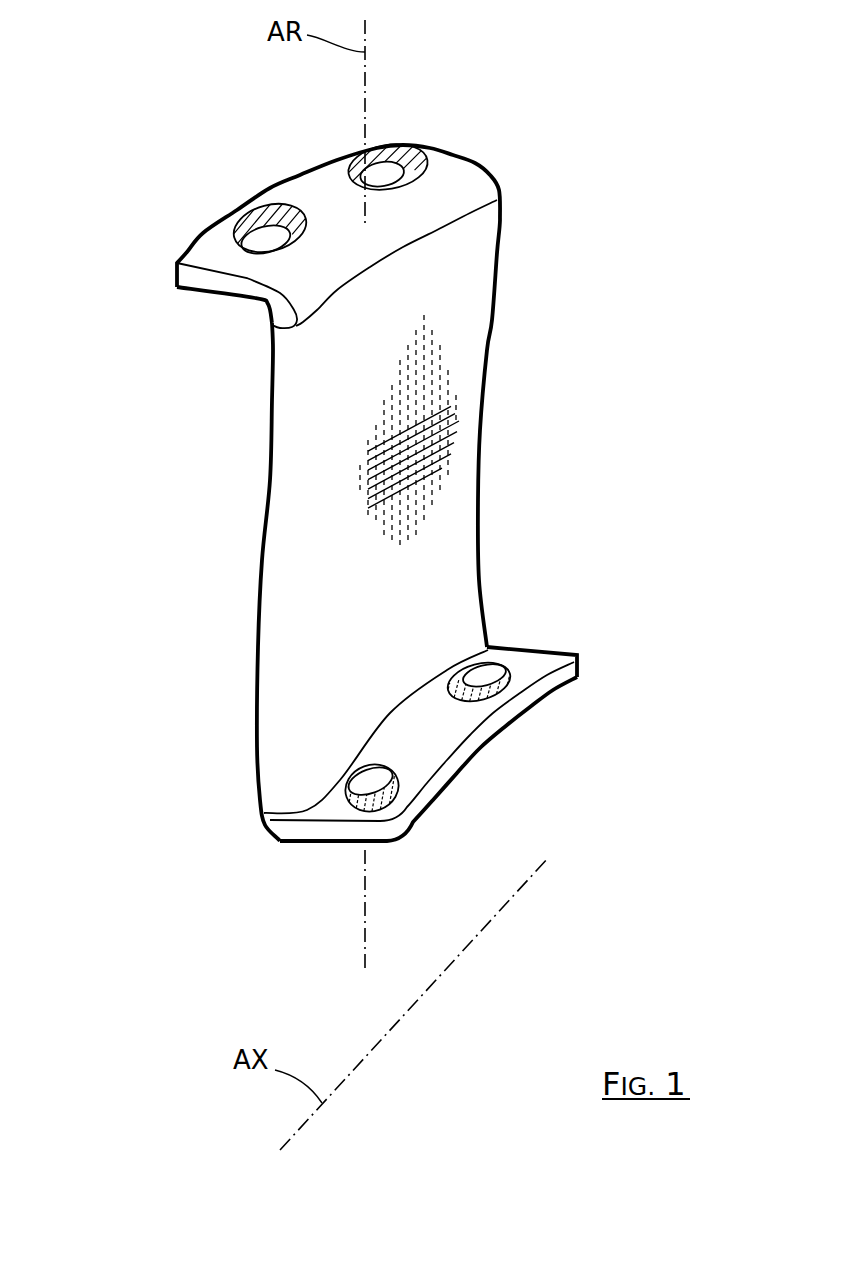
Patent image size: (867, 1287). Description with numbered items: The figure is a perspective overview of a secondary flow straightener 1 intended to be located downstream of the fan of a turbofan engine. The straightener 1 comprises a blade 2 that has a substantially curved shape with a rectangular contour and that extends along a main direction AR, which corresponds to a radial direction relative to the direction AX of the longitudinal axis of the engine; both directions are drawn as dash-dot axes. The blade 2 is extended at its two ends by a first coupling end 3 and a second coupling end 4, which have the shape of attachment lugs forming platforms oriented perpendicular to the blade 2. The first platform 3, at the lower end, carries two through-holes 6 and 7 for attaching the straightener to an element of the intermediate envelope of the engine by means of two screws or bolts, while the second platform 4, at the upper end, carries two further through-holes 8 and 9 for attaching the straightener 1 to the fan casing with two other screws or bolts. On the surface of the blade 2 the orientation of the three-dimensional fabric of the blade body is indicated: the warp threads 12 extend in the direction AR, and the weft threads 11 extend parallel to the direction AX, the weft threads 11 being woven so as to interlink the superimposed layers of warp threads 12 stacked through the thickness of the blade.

The secondary flow straightener 1 is at (608, 102).
The blade 2 is at (226, 561).
The first coupling end 3 is at (638, 667).
The second coupling end 4 is at (134, 272).
The through-hole 6 is at (387, 765).
The through-hole 7 is at (505, 665).
The through-hole 8 is at (247, 233).
The through-hole 9 is at (407, 153).
The weft threads 11 is at (450, 435).
The warp threads 12 is at (442, 357).